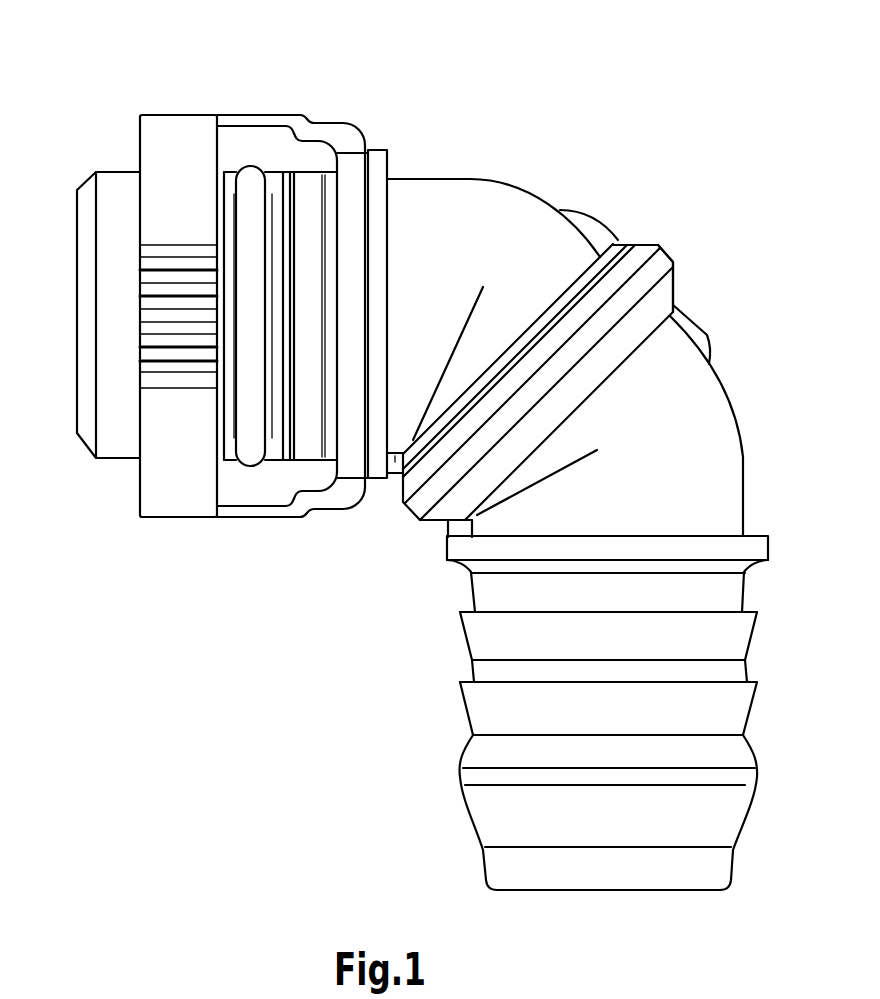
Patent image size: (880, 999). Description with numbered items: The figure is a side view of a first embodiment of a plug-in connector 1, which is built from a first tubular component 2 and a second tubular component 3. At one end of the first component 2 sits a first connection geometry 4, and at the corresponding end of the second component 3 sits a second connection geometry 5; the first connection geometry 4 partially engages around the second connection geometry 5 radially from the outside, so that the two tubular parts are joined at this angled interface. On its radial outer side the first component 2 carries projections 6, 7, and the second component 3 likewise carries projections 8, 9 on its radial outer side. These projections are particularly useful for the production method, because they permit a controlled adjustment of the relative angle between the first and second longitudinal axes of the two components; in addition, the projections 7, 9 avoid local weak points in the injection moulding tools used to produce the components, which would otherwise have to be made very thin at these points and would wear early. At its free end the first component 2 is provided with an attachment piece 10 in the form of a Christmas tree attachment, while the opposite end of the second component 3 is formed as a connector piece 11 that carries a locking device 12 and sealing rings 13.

The plug-in connector 1 is at (660, 109).
The first tubular component 2 is at (687, 493).
The second tubular component 3 is at (432, 210).
The first connection geometry 4 is at (690, 265).
The second connection geometry 5 is at (630, 228).
The projection 6 is at (693, 337).
The projection 7 is at (452, 528).
The projection 8 is at (590, 228).
The projection 9 is at (395, 458).
The attachment piece 10 is at (450, 741).
The connector piece 11 is at (180, 90).
The locking device 12 is at (168, 487).
The sealing rings 13 is at (250, 440).